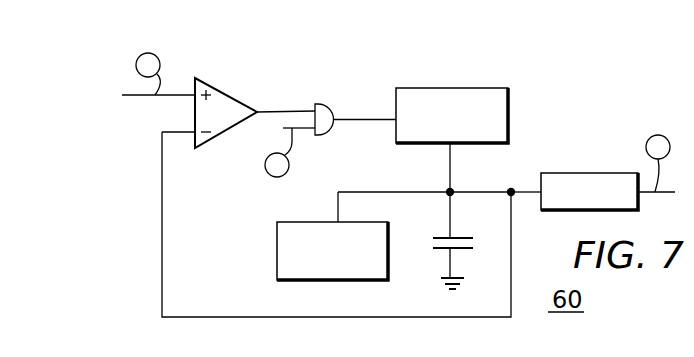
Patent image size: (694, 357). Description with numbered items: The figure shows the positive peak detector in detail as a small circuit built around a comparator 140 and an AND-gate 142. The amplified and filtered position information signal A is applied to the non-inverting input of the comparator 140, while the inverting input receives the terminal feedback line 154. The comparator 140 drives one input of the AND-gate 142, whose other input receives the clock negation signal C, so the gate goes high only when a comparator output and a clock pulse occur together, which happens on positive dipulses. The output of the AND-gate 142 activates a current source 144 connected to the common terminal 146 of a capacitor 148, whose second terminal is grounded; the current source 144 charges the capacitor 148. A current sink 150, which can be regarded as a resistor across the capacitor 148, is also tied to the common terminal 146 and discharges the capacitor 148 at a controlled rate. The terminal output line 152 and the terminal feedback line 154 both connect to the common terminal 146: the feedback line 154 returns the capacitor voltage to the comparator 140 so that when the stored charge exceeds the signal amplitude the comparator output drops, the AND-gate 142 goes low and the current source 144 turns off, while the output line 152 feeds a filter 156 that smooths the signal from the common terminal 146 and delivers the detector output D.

The comparator 140 is at (217, 82).
The AND-gate 142 is at (325, 104).
The current source 144 is at (433, 88).
The common terminal 146 is at (447, 189).
The capacitor 148 is at (463, 237).
The current sink 150 is at (312, 222).
The terminal output line 152 is at (525, 189).
The terminal feedback line 154 is at (405, 317).
The filter 156 is at (595, 173).
The position information signal A is at (148, 74).
The clock negation signal C is at (278, 152).
The output terminal D is at (658, 163).